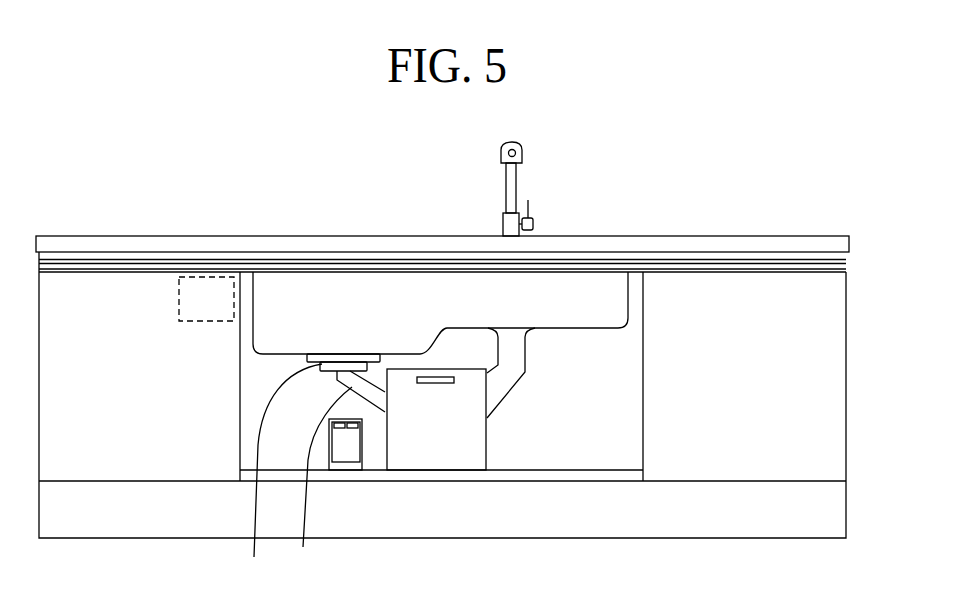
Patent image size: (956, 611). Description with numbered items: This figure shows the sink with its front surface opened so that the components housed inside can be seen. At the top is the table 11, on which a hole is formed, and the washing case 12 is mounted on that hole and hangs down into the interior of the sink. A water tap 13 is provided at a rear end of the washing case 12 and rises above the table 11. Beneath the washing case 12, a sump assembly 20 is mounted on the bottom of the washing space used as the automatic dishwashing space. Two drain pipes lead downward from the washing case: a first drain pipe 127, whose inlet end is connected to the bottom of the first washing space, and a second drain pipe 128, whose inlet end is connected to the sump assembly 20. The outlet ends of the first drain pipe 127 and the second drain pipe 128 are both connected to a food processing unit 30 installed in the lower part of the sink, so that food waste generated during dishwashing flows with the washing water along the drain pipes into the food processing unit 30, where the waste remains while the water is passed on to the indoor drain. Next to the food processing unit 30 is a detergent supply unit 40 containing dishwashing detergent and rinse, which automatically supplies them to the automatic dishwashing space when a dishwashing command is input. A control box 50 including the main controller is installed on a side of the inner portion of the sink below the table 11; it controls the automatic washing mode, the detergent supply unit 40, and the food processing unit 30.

The table 11 is at (803, 247).
The washing case 12 is at (620, 297).
The water tap 13 is at (515, 178).
The sump assembly 20 is at (285, 475).
The food processing unit 30 is at (437, 460).
The detergent supply unit 40 is at (345, 470).
The control box 50 is at (179, 290).
The first drain pipe 127 is at (507, 378).
The second drain pipe 128 is at (320, 482).